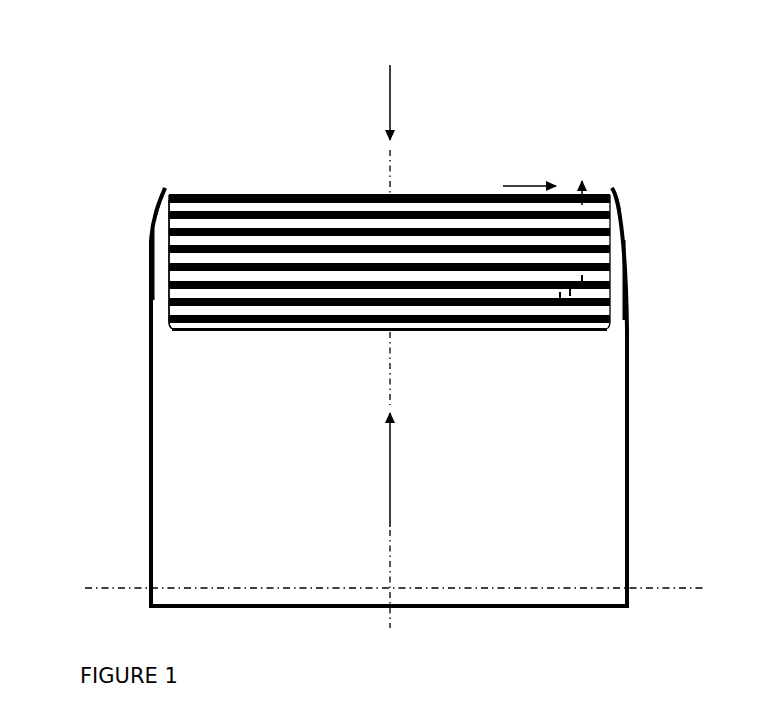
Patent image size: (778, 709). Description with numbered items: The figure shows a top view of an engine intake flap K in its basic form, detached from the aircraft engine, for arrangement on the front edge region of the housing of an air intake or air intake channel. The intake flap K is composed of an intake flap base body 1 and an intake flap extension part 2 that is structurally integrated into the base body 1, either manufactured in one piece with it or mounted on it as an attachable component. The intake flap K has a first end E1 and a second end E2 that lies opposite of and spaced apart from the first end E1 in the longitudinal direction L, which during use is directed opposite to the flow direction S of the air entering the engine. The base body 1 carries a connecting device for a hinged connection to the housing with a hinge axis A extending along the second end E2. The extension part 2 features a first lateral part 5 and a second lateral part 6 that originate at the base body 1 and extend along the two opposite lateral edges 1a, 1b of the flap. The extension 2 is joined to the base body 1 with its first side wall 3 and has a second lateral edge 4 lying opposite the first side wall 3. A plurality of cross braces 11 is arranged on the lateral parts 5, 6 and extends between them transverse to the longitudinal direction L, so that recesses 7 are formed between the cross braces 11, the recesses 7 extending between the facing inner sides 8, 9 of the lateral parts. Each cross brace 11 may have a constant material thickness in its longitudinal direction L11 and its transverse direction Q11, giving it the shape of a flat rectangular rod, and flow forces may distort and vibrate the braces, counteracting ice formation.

The intake flap base body 1 is at (607, 480).
The lateral edge 1a is at (145, 473).
The lateral edge 1b is at (635, 445).
The intake flap extension part 2 is at (515, 112).
The first side wall 3 is at (194, 342).
The second lateral edge 4 is at (453, 176).
The first lateral part 5 is at (157, 283).
The second lateral part 6 is at (622, 272).
The recesses 7 is at (218, 208).
The inner side 8 is at (612, 187).
The inner side 9 is at (177, 187).
The cross braces 11 is at (582, 275).
The flow direction S is at (392, 88).
The longitudinal direction L is at (390, 470).
The longitudinal direction of cross brace L11 is at (513, 186).
The transverse direction of cross brace Q11 is at (578, 187).
The hinge axis A is at (688, 588).
The first end E1 is at (571, 654).
The second end E2 is at (643, 54).
The intake flap K is at (146, 90).